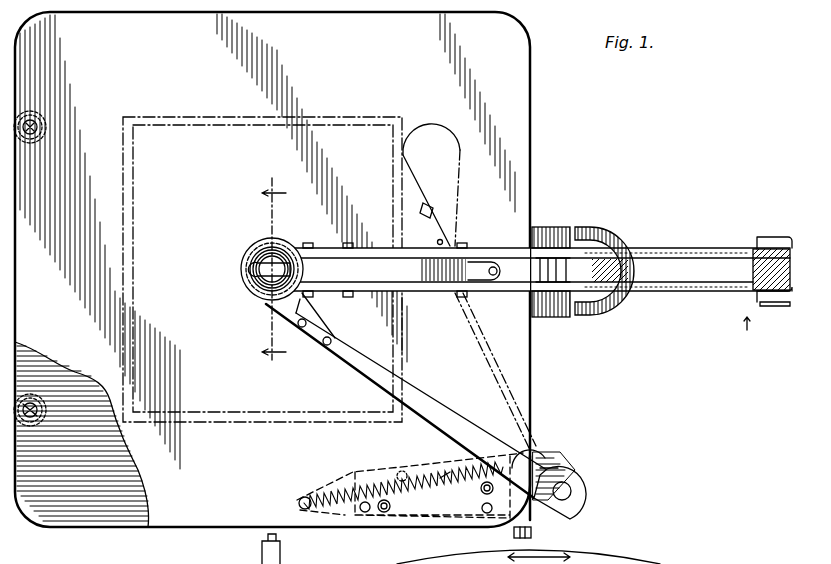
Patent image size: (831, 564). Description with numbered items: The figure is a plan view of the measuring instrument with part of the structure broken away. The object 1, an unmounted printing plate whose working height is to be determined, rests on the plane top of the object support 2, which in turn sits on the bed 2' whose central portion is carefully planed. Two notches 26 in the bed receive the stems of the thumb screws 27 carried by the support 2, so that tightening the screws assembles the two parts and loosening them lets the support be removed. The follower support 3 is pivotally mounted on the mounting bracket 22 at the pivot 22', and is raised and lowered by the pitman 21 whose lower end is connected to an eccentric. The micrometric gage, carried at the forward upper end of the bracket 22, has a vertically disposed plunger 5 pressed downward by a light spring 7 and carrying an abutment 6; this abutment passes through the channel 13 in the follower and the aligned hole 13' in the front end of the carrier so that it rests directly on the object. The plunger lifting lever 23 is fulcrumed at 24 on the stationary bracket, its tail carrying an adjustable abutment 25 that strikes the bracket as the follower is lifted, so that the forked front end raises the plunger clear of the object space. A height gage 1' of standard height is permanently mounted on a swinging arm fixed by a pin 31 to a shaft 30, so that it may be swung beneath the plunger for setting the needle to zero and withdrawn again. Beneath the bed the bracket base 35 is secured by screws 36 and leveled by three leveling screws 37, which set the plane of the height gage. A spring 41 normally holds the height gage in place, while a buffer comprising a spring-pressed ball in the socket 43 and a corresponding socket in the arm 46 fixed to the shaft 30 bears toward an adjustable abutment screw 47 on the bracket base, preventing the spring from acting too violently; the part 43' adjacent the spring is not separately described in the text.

The object 1 is at (251, 269).
The height gage of standard height 1' is at (373, 234).
The object support 2 is at (272, 284).
The bed 2' is at (82, 453).
The follower support 3 is at (494, 250).
The plunger 5 is at (258, 272).
The abutment 6 is at (506, 486).
The light spring 7 is at (274, 272).
The channel 13 is at (251, 269).
The hole in follower carrier 13' is at (268, 249).
The pitman 21 is at (546, 262).
The mounting bracket 22 is at (692, 276).
The pivot of follower support 22' is at (771, 325).
The plunger lifting lever 23 is at (380, 262).
The fulcrum 24 is at (466, 244).
The adjustable abutment 25 is at (494, 277).
The notches 26 is at (34, 140).
The thumb screws 27 is at (44, 128).
The shaft 30 is at (571, 492).
The pin 31 is at (532, 460).
The bracket base 35 is at (428, 518).
The screws 36 is at (480, 491).
The leveling screws 37 is at (481, 511).
The spring 41 is at (443, 478).
The ball receiving socket 43 is at (401, 482).
The spring anchor bolt 43' is at (408, 459).
The arm 46 is at (556, 460).
The abutment 47 is at (531, 534).